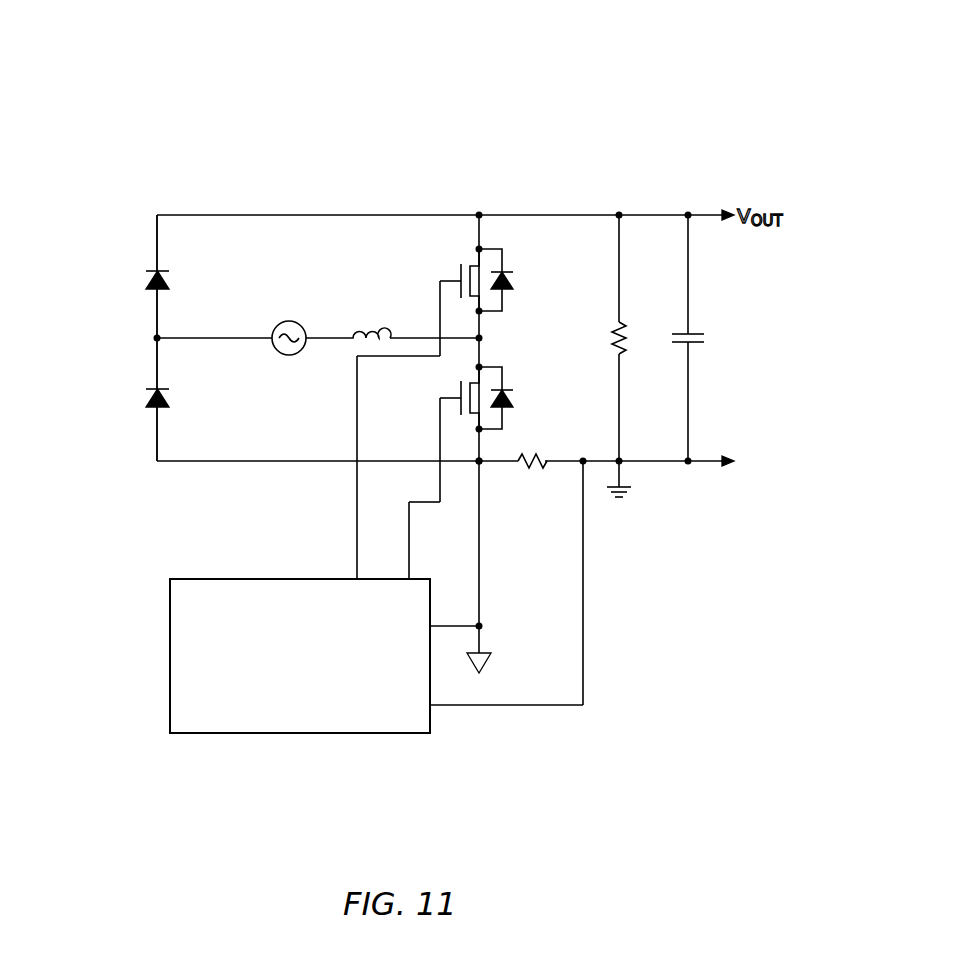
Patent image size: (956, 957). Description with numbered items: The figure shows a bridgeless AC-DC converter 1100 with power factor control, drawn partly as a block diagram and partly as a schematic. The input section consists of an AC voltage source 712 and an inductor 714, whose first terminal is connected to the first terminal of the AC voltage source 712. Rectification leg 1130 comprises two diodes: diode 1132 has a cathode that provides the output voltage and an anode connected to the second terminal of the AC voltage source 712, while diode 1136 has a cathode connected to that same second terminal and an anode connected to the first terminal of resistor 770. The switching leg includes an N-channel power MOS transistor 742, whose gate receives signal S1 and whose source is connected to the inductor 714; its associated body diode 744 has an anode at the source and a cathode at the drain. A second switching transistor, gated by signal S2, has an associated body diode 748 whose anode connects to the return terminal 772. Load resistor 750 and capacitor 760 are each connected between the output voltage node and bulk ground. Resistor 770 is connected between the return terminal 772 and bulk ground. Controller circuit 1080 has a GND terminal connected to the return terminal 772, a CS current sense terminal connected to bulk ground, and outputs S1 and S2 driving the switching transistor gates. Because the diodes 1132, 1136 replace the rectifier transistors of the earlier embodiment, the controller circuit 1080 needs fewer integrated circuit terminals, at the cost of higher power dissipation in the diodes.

The bridgeless AC-DC converter 1100 is at (148, 45).
The rectification leg 1130 is at (176, 190).
The diode 1132 is at (146, 282).
The diode 1136 is at (146, 397).
The AC voltage source 712 is at (293, 321).
The inductor 714 is at (369, 333).
The transistor 742 is at (470, 265).
The body diode 744 is at (512, 282).
The body diode 748 is at (512, 400).
The load resistor 750 is at (608, 333).
The capacitor 760 is at (700, 335).
The resistor 770 is at (533, 449).
The return terminal 772 is at (482, 465).
The controller circuit 1080 is at (170, 648).